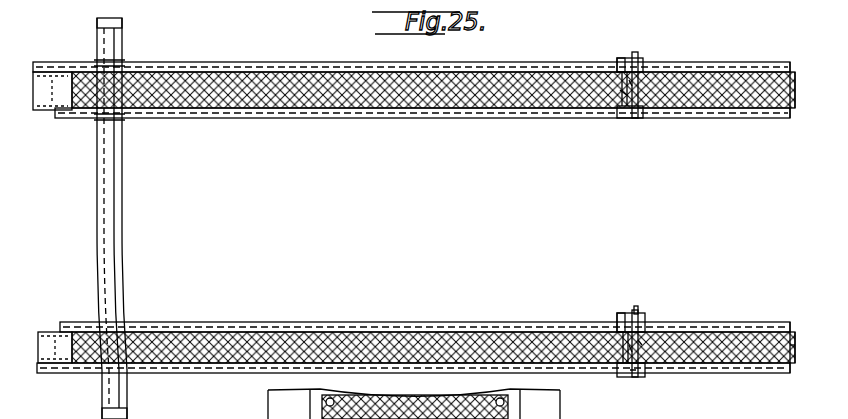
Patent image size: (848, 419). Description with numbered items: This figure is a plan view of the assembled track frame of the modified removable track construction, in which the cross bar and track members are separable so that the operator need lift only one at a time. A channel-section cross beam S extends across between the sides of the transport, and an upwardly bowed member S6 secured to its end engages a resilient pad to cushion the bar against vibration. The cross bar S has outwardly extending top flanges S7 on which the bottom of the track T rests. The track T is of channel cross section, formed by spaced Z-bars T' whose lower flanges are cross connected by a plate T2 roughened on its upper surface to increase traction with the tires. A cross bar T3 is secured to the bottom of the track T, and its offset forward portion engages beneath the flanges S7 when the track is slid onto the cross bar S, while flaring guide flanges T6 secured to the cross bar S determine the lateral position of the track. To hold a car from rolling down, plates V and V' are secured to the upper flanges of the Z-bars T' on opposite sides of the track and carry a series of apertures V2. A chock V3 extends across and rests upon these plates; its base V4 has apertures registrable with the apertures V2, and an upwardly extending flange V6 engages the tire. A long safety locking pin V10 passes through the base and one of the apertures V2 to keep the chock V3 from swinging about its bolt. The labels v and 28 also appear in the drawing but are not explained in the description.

The cross beam S is at (118, 290).
The upwardly bowed member S6 is at (122, 22).
The top flanges S7 is at (121, 177).
The track member T is at (416, 331).
The Z-bars T' is at (425, 312).
The plate T2 is at (220, 97).
The cross bar T3 is at (123, 112).
The guide flanges T6 is at (123, 62).
The plate V is at (620, 226).
The plate V' is at (659, 205).
The apertures V2 is at (622, 58).
The chock V3 is at (625, 93).
The base V4 is at (642, 342).
The flange V6 is at (632, 84).
The safety locking pin V10 is at (637, 312).
The beam end v is at (798, 347).
The cross member 28 is at (426, 404).